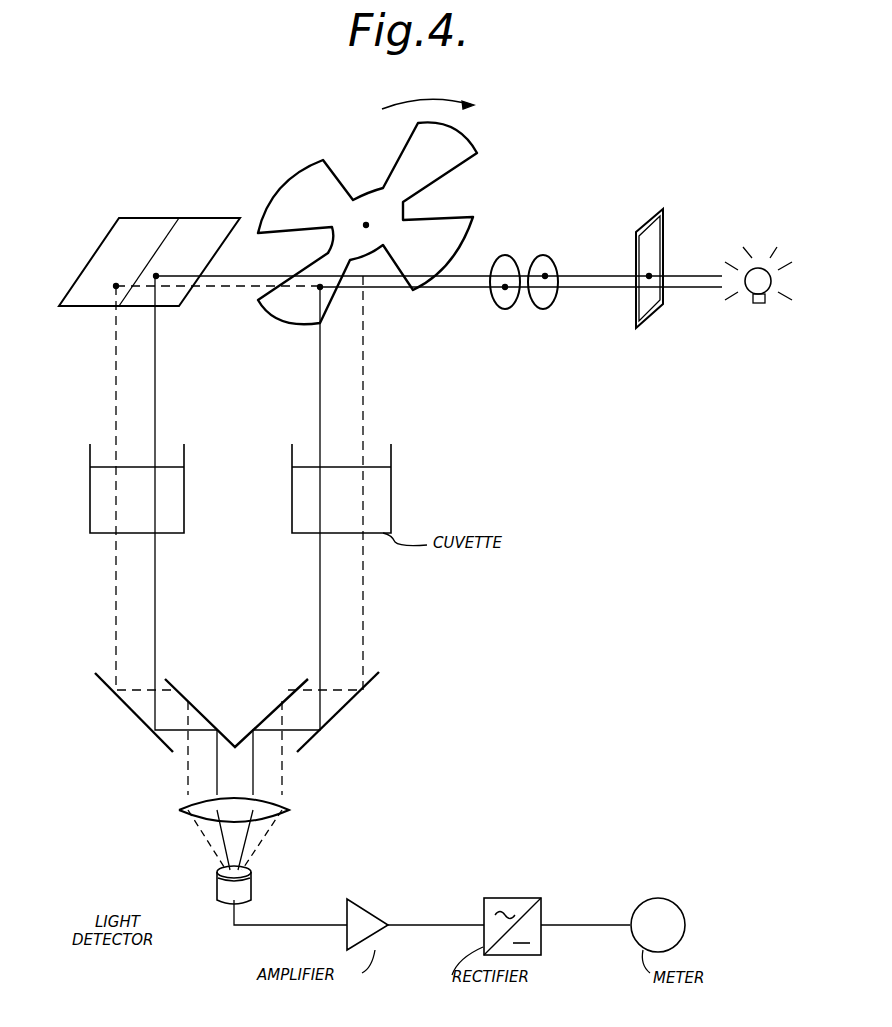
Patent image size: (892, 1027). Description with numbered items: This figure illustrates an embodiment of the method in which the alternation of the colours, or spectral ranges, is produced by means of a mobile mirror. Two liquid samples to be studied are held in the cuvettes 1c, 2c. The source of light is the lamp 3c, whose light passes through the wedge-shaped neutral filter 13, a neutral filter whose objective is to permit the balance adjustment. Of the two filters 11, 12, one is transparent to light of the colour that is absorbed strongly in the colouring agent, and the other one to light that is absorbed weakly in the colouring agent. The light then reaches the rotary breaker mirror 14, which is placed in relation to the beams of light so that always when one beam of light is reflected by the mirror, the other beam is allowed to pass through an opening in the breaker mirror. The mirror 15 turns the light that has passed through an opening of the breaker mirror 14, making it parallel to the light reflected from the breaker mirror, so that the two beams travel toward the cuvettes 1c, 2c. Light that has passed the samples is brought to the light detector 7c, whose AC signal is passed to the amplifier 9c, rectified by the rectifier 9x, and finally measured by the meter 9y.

The mirror 15 is at (192, 224).
The rotary breaker mirror 14 is at (447, 233).
The filter 11 is at (502, 295).
The filter 12 is at (540, 295).
The wedge-shaped neutral filter 13 is at (647, 300).
The lamp 3c is at (768, 290).
The cuvette 1c is at (100, 502).
The cuvette 2c is at (378, 493).
The light detector 7c is at (222, 890).
The amplifier 9c is at (368, 920).
The rectifier 9x is at (523, 903).
The meter 9y is at (667, 903).